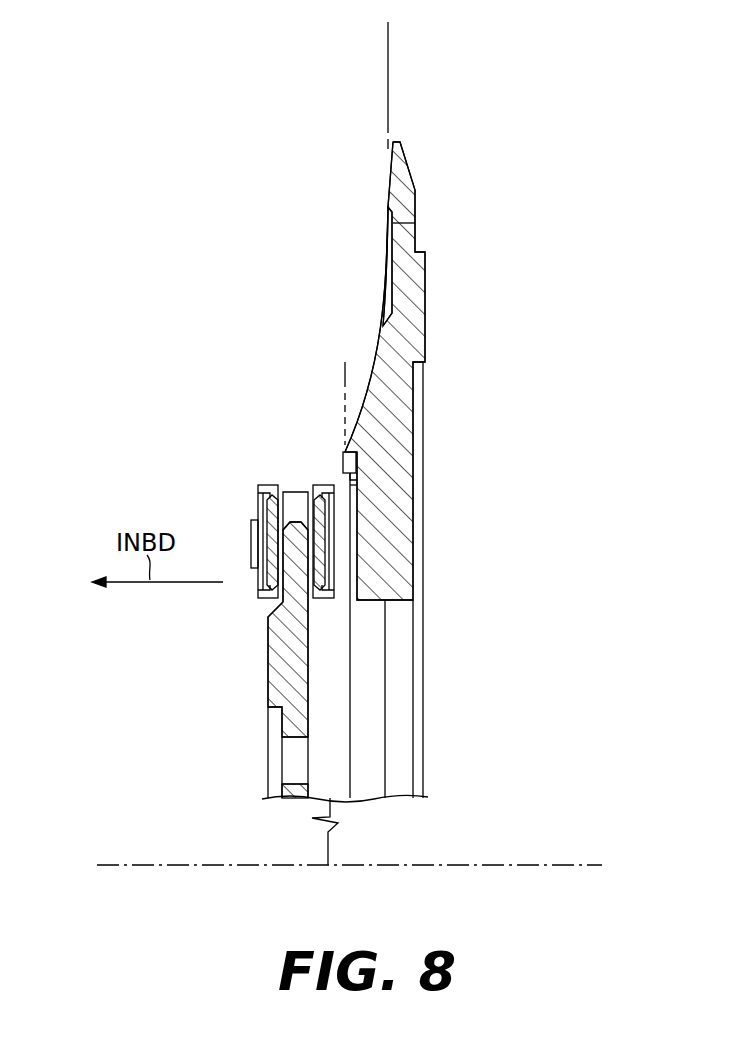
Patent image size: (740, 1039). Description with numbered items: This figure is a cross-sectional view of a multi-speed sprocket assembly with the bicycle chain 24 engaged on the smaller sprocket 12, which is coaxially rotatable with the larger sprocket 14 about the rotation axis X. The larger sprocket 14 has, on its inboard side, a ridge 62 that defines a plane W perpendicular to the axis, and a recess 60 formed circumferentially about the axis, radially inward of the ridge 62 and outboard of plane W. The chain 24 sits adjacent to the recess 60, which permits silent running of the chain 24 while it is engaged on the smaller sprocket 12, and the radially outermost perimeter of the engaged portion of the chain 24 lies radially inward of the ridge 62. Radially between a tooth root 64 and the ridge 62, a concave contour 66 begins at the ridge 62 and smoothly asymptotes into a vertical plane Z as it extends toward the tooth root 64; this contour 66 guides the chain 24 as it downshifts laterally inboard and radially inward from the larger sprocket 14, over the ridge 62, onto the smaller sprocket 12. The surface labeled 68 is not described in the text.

The smaller sprocket 12 is at (268, 645).
The larger sprocket 14 is at (402, 440).
The bicycle chain 24 is at (240, 500).
The recess 60 is at (350, 478).
The ridge 62 is at (347, 452).
The tooth root 64 is at (395, 220).
The concave contour 66 is at (378, 350).
The outer surface 68 is at (383, 327).